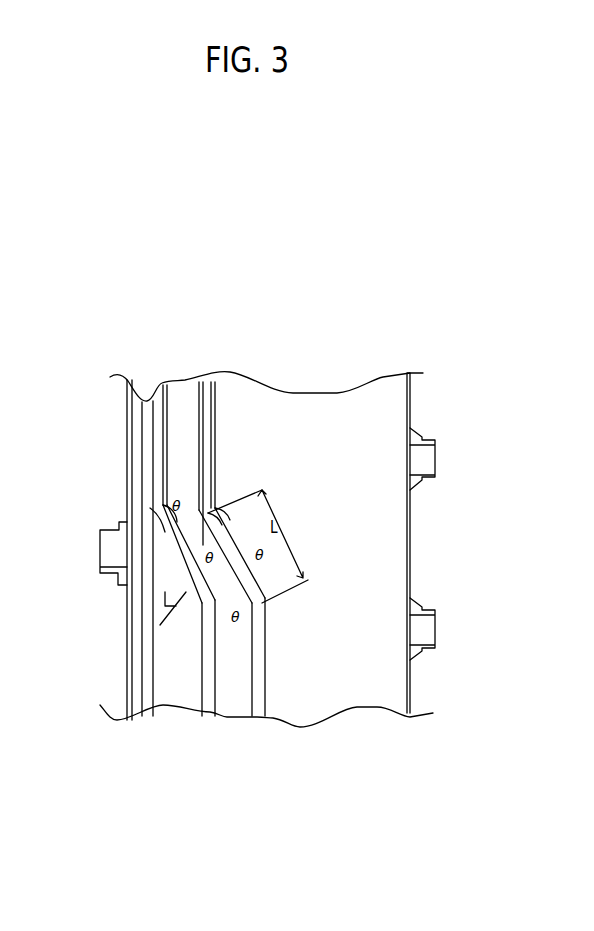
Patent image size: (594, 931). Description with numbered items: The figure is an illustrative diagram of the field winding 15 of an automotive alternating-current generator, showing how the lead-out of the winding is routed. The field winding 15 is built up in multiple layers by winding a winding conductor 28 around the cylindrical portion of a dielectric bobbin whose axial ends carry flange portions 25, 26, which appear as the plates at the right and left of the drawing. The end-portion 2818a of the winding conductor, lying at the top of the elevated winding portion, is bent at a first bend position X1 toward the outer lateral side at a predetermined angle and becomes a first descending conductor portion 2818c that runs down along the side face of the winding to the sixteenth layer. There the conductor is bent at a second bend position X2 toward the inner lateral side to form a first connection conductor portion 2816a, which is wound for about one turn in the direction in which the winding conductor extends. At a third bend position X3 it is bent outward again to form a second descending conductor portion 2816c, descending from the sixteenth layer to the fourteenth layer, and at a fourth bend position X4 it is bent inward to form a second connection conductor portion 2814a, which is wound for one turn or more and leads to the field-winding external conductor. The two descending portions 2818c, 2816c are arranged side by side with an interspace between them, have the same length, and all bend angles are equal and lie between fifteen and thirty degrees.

The field winding 15 is at (260, 295).
The flange portion 25 is at (413, 432).
The flange portion 26 is at (124, 450).
The winding conductor 28 is at (367, 415).
The second connection conductor portion 2814a is at (153, 422).
The first connection conductor portion 2816a is at (207, 407).
The second descending conductor portion 2816c is at (212, 470).
The end-portion of the winding conductor 2818a is at (260, 683).
The first descending conductor portion 2818c is at (245, 585).
The first bend position X1 is at (270, 603).
The second bend position X2 is at (217, 505).
The third bend position X3 is at (200, 612).
The fourth bend position X4 is at (150, 508).